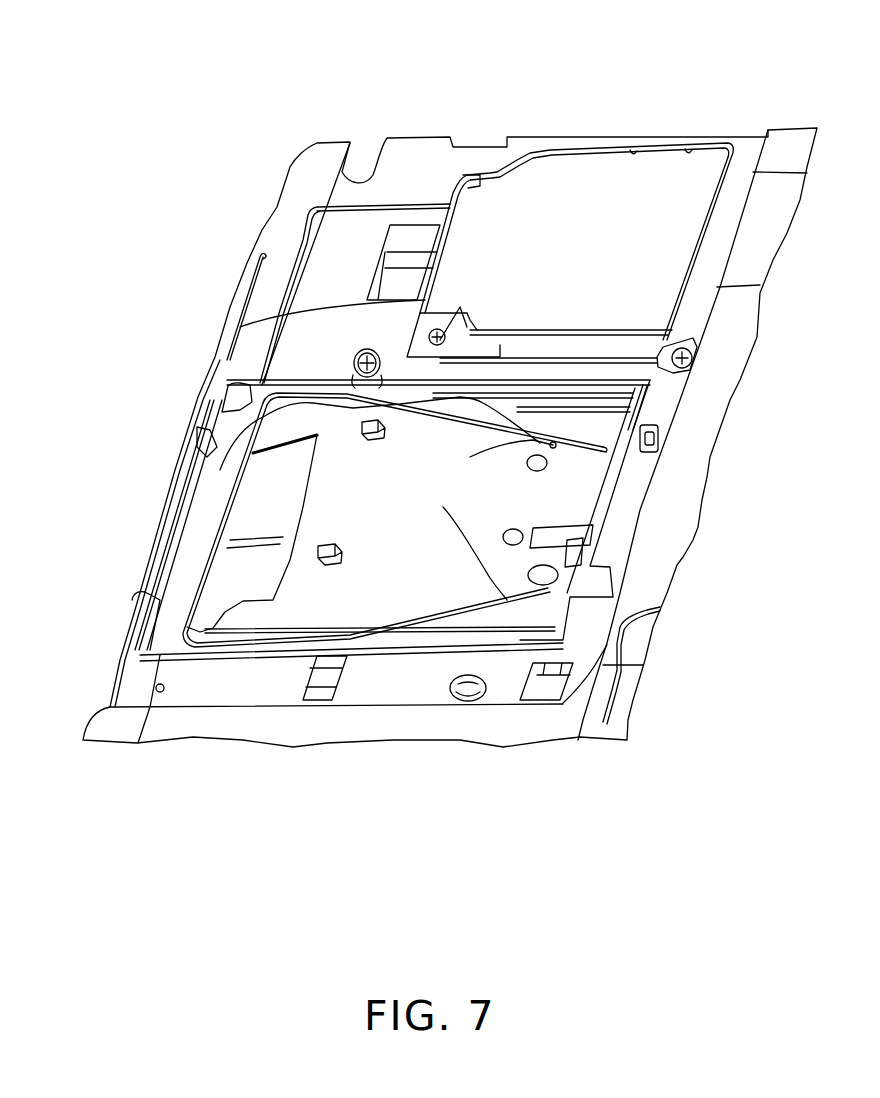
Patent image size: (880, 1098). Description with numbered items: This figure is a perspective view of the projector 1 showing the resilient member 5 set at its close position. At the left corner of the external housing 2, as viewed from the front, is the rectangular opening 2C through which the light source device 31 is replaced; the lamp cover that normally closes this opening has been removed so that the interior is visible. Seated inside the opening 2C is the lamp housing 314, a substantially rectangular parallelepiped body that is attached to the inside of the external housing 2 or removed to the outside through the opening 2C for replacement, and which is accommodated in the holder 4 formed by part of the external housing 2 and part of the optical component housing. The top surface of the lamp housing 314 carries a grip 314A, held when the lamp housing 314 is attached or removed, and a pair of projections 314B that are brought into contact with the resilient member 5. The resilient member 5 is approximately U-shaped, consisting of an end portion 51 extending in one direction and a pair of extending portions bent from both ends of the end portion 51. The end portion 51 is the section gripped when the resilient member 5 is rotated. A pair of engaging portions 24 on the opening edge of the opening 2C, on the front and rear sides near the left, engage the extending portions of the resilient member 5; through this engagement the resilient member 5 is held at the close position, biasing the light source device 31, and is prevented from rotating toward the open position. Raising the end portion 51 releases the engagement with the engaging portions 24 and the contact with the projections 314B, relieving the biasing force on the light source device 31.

The printer 1 is at (520, 72).
The external housing 2 is at (688, 134).
The holder 4 is at (570, 258).
The opening 2C is at (158, 612).
The resilient member 5 is at (460, 418).
The engaging portions 24 is at (320, 400).
The light source device 31 is at (371, 515).
The lamp housing 314 is at (258, 503).
The grip 314A is at (225, 465).
The projections 314B is at (547, 443).
The end portion 51 is at (218, 552).